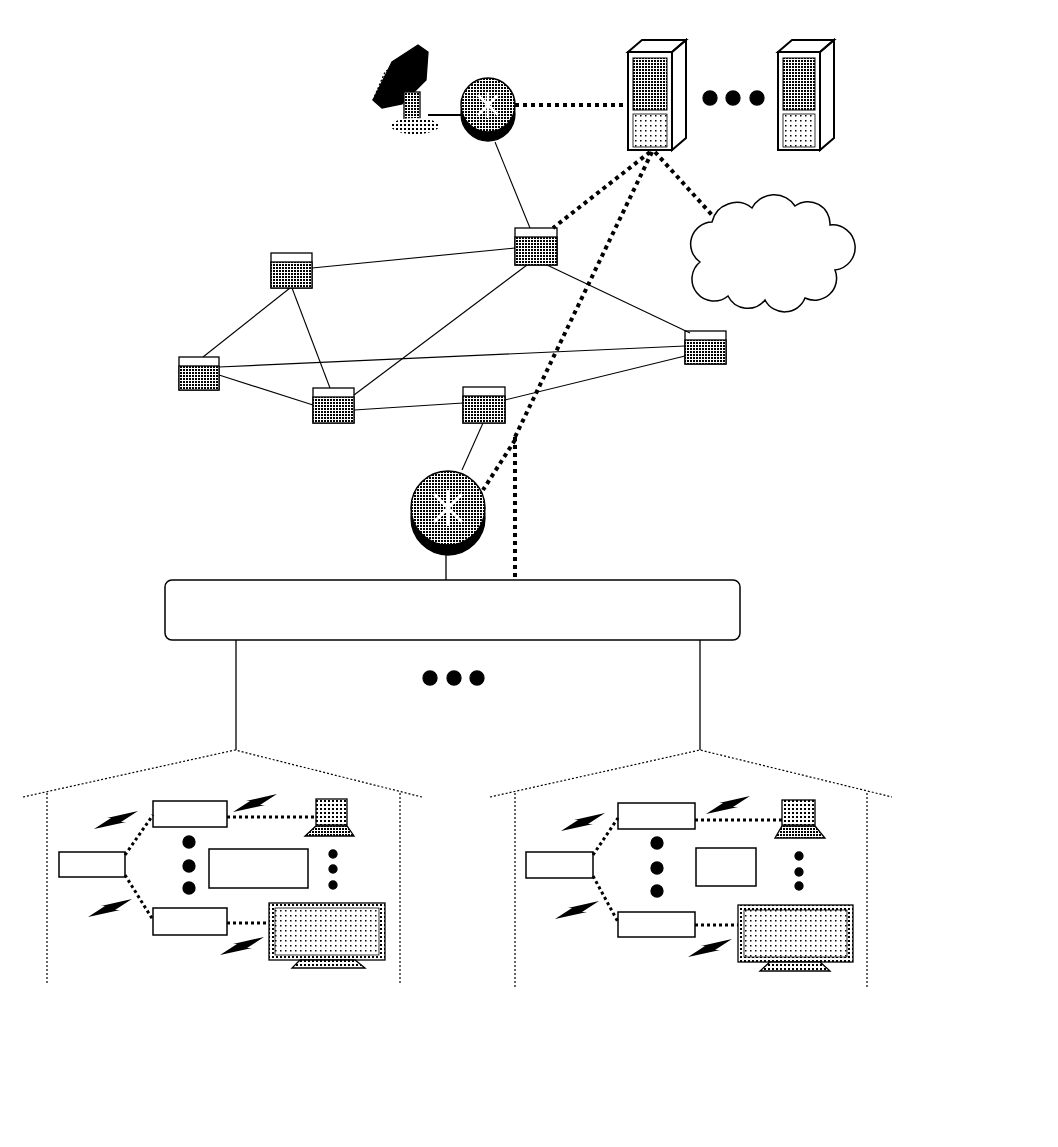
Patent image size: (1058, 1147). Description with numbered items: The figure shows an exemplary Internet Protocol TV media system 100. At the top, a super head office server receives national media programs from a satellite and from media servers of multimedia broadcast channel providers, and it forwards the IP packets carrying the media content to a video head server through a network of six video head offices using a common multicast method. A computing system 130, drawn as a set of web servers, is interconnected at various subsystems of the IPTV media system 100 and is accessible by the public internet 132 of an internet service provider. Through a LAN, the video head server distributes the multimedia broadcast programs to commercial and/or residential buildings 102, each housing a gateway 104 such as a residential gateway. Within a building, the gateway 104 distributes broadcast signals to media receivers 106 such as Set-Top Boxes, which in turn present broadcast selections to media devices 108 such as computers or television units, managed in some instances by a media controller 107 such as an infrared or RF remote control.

The IPTV media system 100 is at (457, 503).
The computing system 130 is at (810, 43).
The public internet 132 is at (773, 253).
The commercial and/or residential buildings 102 is at (222, 878).
The gateway 104 is at (92, 864).
The media receivers 106 is at (190, 868).
The media controller 107 is at (258, 868).
The media devices 108 is at (338, 800).